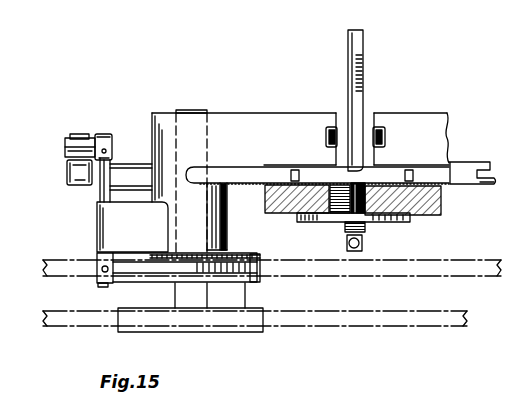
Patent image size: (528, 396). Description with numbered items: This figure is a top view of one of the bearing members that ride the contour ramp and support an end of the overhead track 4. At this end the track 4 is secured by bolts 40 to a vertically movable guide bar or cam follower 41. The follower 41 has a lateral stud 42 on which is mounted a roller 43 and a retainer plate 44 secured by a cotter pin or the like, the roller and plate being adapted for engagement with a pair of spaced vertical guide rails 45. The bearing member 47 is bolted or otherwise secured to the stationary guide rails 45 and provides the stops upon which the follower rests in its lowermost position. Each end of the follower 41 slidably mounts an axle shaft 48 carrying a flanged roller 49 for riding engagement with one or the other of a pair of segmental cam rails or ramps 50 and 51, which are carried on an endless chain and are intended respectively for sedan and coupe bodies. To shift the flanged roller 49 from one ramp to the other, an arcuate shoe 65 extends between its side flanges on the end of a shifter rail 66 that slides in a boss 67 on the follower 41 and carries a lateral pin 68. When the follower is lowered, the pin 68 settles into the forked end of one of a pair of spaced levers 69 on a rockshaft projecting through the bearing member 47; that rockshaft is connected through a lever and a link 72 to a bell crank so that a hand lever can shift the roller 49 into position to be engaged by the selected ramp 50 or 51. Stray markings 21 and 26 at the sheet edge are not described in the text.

The track 4 is at (356, 43).
The frame member 21 is at (20, 5).
The support 26 is at (12, 164).
The bolts 40 is at (381, 127).
The guide bar or cam follower 41 is at (232, 120).
The lateral stud 42 is at (371, 216).
The roller 43 is at (336, 212).
The retainer plate 44 is at (302, 215).
The vertical guide rails 45 is at (266, 212).
The bearing member 47 is at (123, 173).
The axle shaft 48 is at (186, 108).
The flanged roller 49 is at (243, 282).
The segmental cam rail or ramp 50 is at (412, 272).
The segmental cam rail or ramp 51 is at (386, 318).
The arcuate shoe 65 is at (130, 273).
The shifter rail 66 is at (100, 194).
The boss 67 is at (118, 230).
The lateral pin 68 is at (80, 145).
The levers 69 is at (72, 185).
The link 72 is at (349, 247).